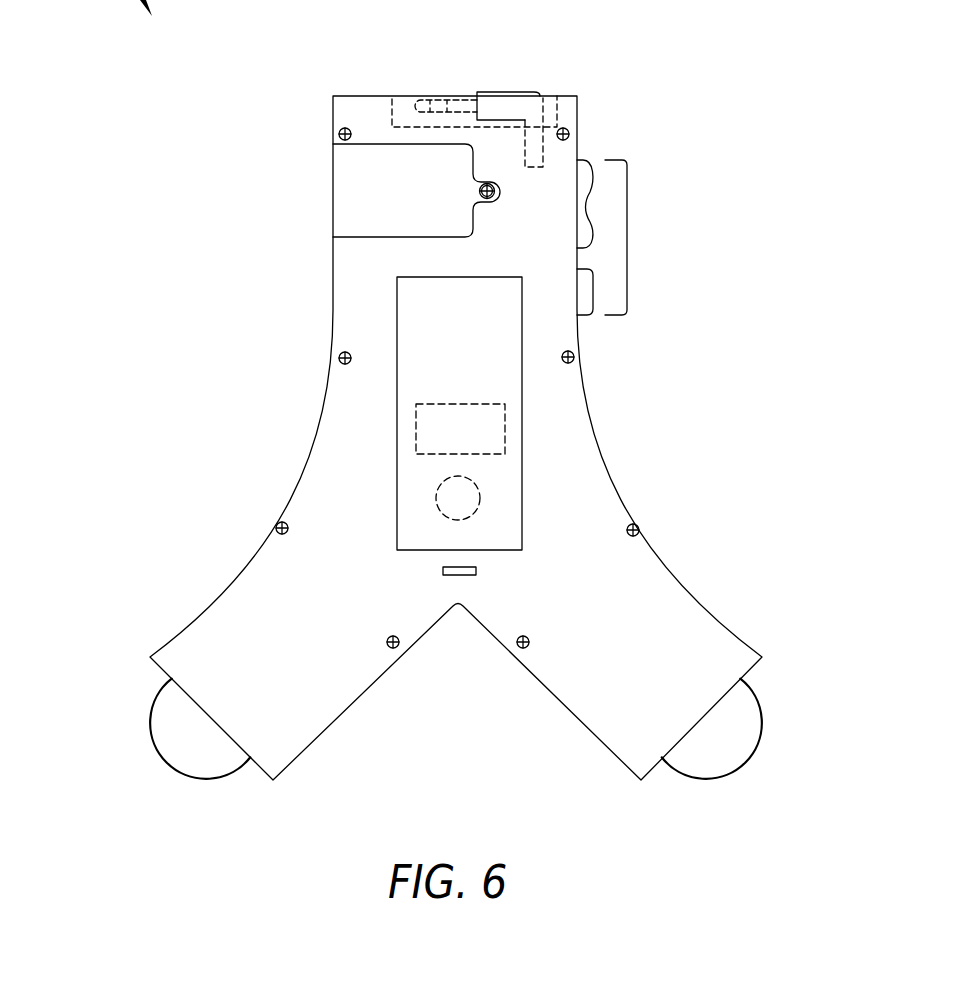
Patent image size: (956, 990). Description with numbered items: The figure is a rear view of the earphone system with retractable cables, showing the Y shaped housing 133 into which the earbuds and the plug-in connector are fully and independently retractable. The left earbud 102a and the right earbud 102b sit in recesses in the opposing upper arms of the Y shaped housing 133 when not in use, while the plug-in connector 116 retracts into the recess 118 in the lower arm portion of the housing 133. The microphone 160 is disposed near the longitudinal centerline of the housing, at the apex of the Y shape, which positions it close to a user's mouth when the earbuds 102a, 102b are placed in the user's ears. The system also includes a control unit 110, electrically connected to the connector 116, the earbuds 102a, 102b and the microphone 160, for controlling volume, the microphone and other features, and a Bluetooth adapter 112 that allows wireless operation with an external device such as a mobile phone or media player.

The left earbud 102a is at (163, 768).
The right earbud 102b is at (749, 768).
The control unit 110 is at (627, 237).
The Bluetooth adapter 112 is at (333, 185).
The plug-in connector 116 is at (507, 92).
The recess 118 is at (402, 85).
The Y shaped housing 133 is at (323, 627).
The microphone 160 is at (476, 571).